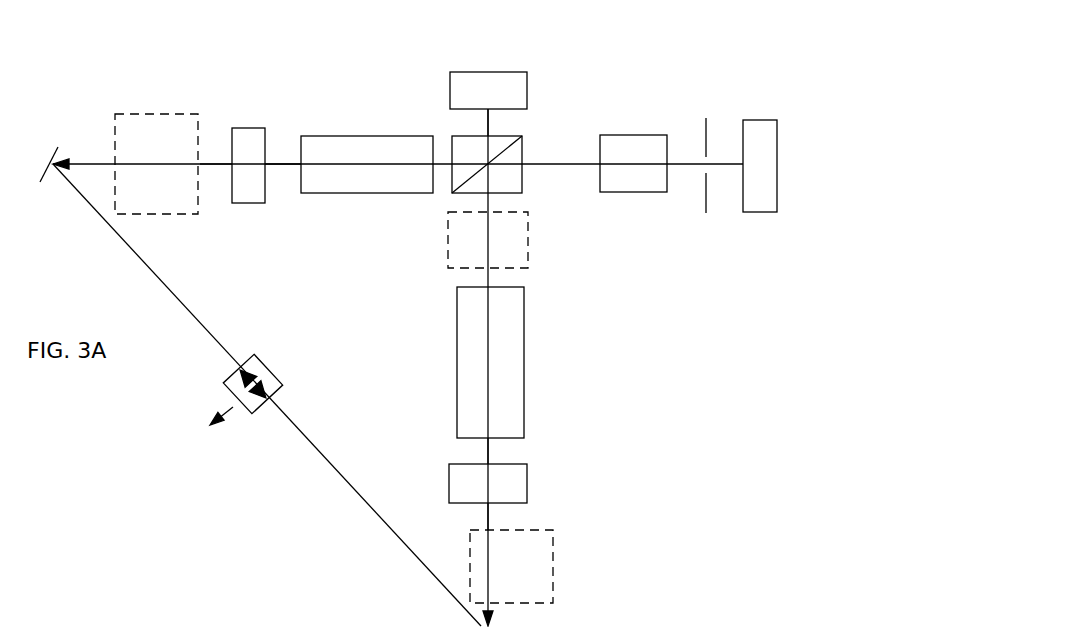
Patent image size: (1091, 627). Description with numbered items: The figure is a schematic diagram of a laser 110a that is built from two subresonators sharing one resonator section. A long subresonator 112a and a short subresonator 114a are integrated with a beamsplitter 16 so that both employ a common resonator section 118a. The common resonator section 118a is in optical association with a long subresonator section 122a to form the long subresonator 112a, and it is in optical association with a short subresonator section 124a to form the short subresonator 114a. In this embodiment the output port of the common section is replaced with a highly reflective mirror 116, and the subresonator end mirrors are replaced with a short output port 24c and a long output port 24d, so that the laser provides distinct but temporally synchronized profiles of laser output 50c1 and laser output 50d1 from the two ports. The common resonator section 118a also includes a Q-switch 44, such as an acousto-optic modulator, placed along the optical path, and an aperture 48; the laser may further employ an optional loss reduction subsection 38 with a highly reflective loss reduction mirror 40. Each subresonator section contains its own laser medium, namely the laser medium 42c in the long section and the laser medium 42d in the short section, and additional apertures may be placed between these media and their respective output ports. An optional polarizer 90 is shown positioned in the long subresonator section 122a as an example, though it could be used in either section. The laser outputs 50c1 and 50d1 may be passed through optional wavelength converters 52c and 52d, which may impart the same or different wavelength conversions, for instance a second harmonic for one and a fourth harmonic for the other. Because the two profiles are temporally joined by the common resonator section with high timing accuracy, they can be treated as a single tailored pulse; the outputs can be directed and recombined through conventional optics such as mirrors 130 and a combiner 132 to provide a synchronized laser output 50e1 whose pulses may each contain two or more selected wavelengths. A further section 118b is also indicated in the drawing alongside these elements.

The mirrors 130 is at (55, 149).
The wavelength converter 52d is at (140, 112).
The long output port 24d is at (258, 128).
The laser medium 42d is at (361, 193).
The short subresonator 114a is at (334, 99).
The beamsplitter 16 is at (462, 136).
The loss reduction mirror 40 is at (480, 72).
The loss reduction subsection 38 is at (490, 126).
The Q-switch 44 is at (632, 135).
The aperture 48 is at (704, 136).
The highly reflective mirror 116 is at (760, 120).
The common resonator section 118a is at (727, 76).
The laser 110a is at (820, 83).
The laser output 50d1 is at (212, 166).
The short subresonator section 124a is at (283, 166).
The polarizer 90 is at (528, 247).
The laser medium 42c is at (524, 333).
The long subresonator 112a is at (686, 341).
The long subresonator section 122a is at (487, 456).
The short output port 24c is at (530, 480).
The laser output 50c1 is at (487, 517).
The wavelength converter 52c is at (553, 550).
The resonator arm 118b is at (711, 616).
The combiner 132 is at (270, 368).
The laser output 50e1 is at (238, 412).